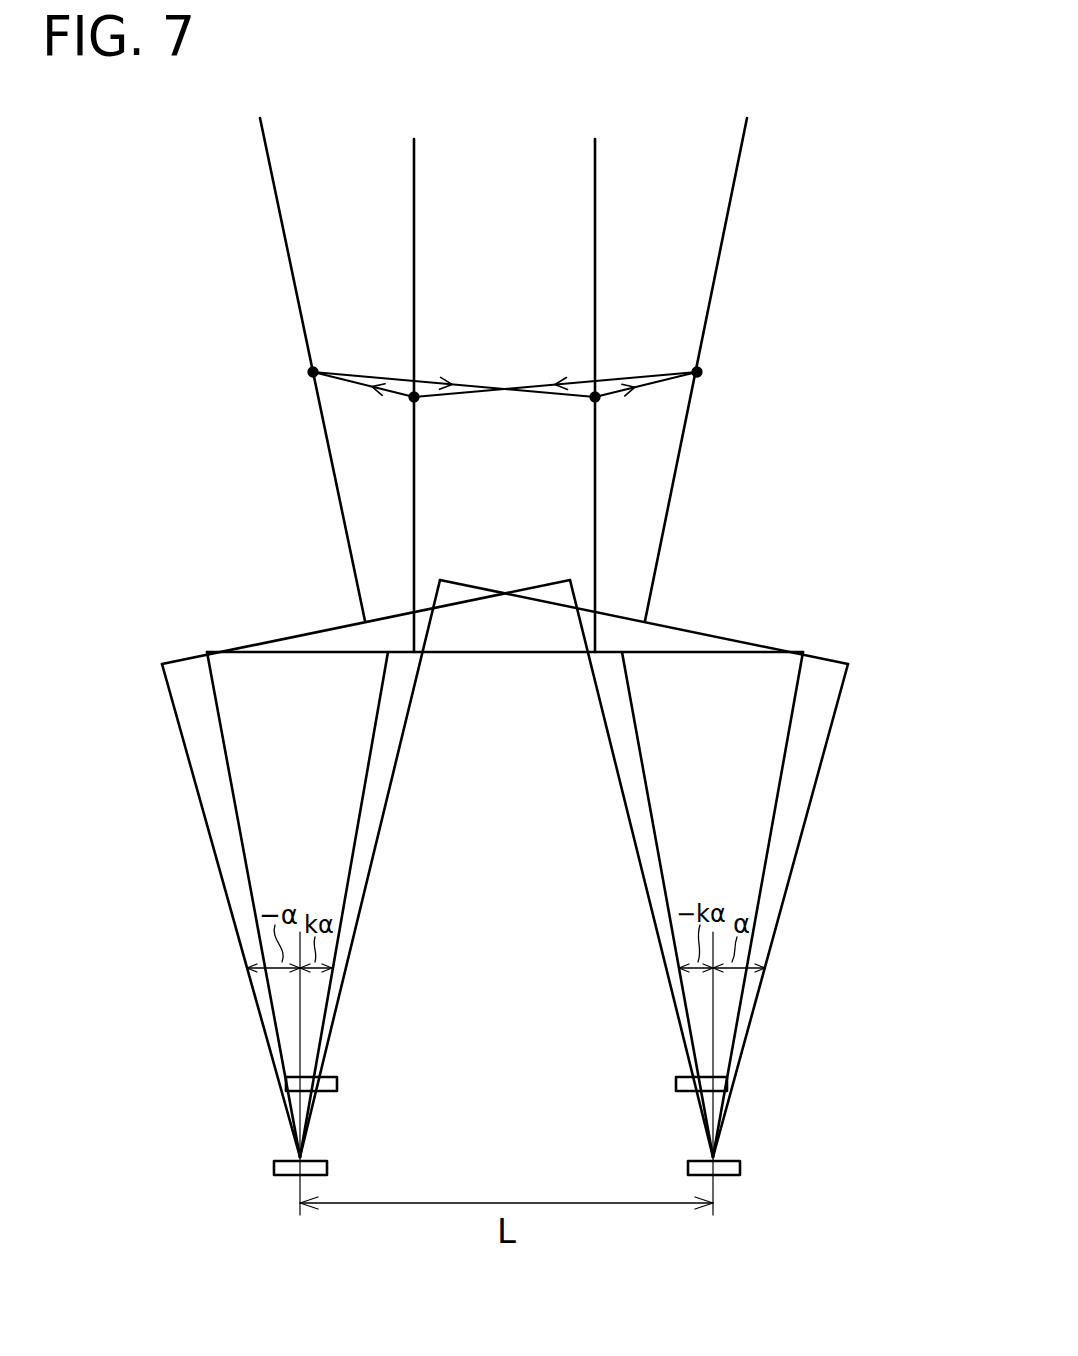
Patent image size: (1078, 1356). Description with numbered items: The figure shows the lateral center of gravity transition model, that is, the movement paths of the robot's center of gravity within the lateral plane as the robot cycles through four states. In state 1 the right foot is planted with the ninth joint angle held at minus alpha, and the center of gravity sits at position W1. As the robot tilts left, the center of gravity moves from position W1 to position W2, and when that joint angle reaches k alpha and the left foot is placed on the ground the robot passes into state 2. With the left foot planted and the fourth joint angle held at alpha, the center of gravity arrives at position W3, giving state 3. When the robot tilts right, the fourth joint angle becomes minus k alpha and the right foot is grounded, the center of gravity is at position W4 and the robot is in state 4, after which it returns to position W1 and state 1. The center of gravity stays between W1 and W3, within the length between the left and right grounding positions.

The state 1 is at (288, 253).
The state 2 is at (595, 287).
The state 3 is at (723, 242).
The state 4 is at (414, 207).
The center of gravity position W1 is at (288, 372).
The center of gravity position W2 is at (571, 413).
The center of gravity position W3 is at (722, 372).
The center of gravity position W4 is at (439, 413).